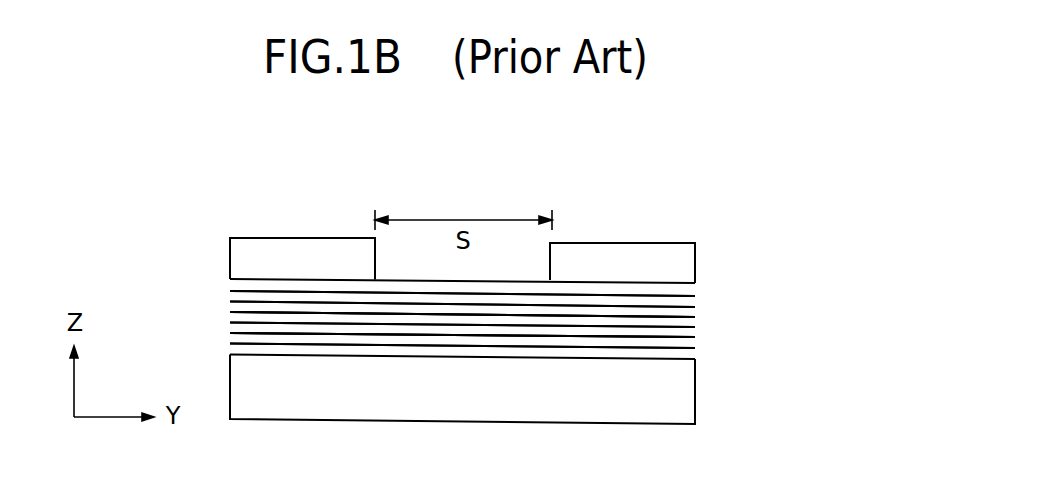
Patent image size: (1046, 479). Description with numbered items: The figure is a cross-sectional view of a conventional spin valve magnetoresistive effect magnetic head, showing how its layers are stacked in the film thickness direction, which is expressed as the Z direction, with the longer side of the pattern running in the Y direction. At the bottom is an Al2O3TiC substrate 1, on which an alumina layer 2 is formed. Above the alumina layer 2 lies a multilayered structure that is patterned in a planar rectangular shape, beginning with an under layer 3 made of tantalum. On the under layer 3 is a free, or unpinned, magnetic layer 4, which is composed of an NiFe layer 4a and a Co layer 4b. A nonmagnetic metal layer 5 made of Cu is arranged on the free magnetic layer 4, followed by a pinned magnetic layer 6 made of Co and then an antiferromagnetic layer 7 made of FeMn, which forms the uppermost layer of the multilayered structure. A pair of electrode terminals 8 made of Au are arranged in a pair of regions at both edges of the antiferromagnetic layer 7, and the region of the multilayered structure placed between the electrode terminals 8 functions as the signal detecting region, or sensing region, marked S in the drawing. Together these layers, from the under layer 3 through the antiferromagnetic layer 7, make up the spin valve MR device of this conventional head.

The Al2O3TiC substrate 1 is at (332, 393).
The alumina layer 2 is at (452, 352).
The under layer 3 is at (695, 343).
The free magnetic layer 4 is at (795, 332).
The NiFe layer 4a is at (695, 337).
The Co layer 4b is at (695, 325).
The nonmagnetic metal layer 5 is at (690, 312).
The pinned magnetic layer 6 is at (689, 302).
The antiferromagnetic layer 7 is at (680, 289).
The electrode terminals 8 is at (275, 247).